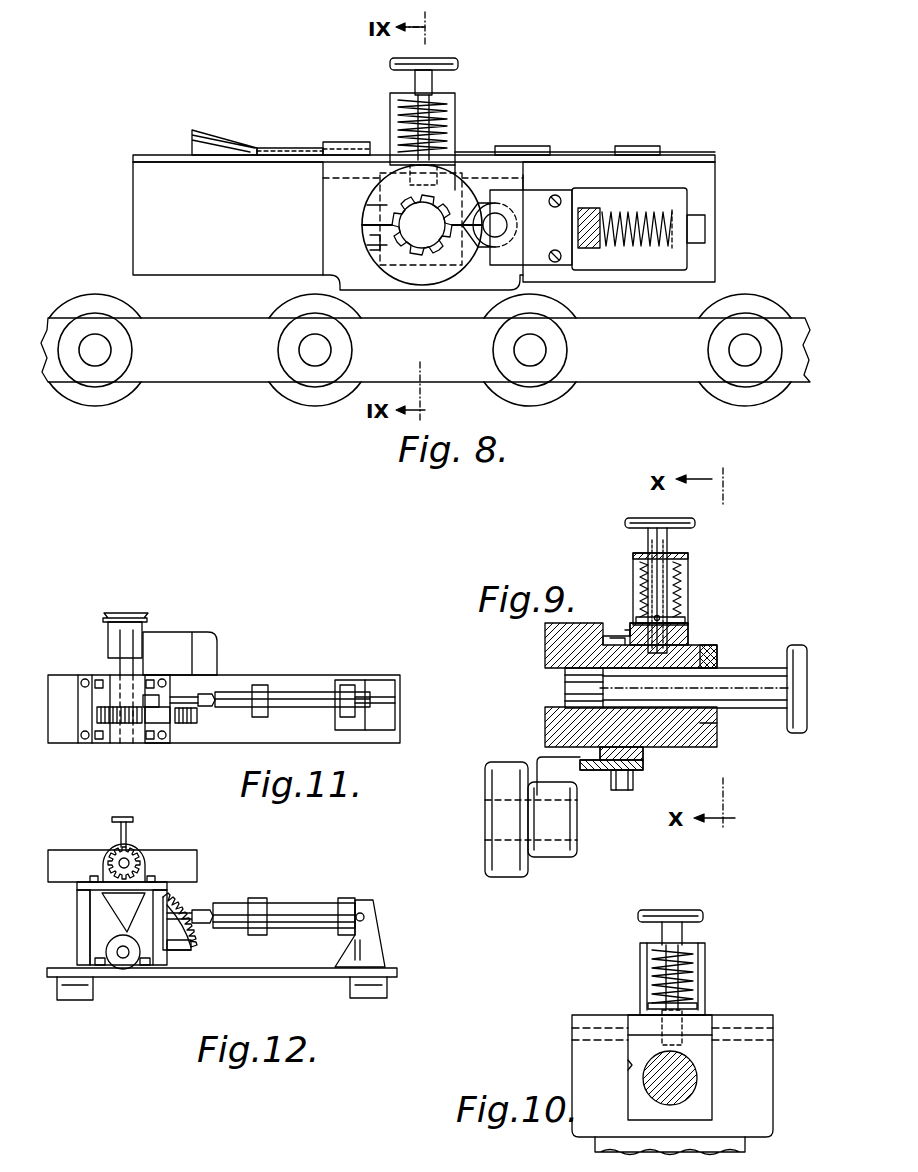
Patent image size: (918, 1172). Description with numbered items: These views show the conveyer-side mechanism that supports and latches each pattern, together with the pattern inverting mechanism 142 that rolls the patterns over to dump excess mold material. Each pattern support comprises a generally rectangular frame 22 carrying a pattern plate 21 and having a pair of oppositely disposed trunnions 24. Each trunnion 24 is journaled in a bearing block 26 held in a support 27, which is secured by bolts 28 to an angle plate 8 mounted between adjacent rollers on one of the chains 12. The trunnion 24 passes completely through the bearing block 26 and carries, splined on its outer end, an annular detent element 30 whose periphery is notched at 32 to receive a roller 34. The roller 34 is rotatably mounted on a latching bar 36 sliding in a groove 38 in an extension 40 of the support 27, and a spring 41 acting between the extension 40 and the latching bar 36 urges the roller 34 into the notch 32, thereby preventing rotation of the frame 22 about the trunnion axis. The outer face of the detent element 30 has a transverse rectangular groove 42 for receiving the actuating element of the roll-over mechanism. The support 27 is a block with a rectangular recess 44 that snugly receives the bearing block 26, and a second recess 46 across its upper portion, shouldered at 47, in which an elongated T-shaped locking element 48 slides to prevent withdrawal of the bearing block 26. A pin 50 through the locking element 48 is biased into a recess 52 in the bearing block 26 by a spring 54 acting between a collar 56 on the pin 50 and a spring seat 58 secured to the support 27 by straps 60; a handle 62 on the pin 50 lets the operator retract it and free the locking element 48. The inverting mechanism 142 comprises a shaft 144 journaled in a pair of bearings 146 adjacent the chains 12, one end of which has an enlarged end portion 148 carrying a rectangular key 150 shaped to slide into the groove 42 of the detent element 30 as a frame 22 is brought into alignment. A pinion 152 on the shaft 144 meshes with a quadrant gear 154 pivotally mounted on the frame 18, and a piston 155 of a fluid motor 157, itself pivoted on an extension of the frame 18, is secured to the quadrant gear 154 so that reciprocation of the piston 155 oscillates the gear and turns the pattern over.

In FIG. 8, the angle plate 8 is at (522, 302).
In FIG. 9, the angle plate 8 is at (567, 772).
In FIG. 8, the chains 12 is at (228, 365).
In FIG. 9, the chains 12 is at (497, 775).
In FIG. 11, the frame 18 is at (350, 735).
In FIG. 12, the frame 18 is at (292, 950).
In FIG. 8, the pattern plate 21 is at (147, 158).
In FIG. 8, the frame 22 is at (178, 190).
In FIG. 8, the trunnion 24 is at (435, 218).
In FIG. 9, the trunnion 24 is at (777, 696).
In FIG. 10, the trunnion 24 is at (685, 1080).
In FIG. 9, the bearing block 26 is at (705, 723).
In FIG. 10, the bearing block 26 is at (705, 1110).
In FIG. 8, the support 27 is at (323, 195).
In FIG. 9, the support 27 is at (657, 748).
In FIG. 10, the support 27 is at (760, 1125).
In FIG. 9, the bolts 28 is at (625, 790).
In FIG. 8, the annular detent element 30 is at (380, 195).
In FIG. 9, the annular detent element 30 is at (548, 642).
In FIG. 11, the annular detent element 30 is at (125, 618).
In FIG. 8, the notch 32 is at (445, 240).
In FIG. 8, the roller 34 is at (483, 255).
In FIG. 8, the latching bar 36 is at (535, 195).
In FIG. 8, the groove 38 is at (600, 212).
In FIG. 8, the extension 40 is at (655, 200).
In FIG. 8, the spring 41 is at (612, 248).
In FIG. 8, the groove 42 is at (375, 215).
In FIG. 9, the groove 42 is at (548, 674).
In FIG. 11, the groove 42 is at (136, 622).
In FIG. 8, the recess 44 is at (380, 262).
In FIG. 10, the recess 44 is at (630, 1065).
In FIG. 9, the second recess 46 is at (616, 642).
In FIG. 9, the shoulders 47 is at (632, 632).
In FIG. 8, the locking element 48 is at (488, 178).
In FIG. 9, the locking element 48 is at (690, 628).
In FIG. 10, the locking element 48 is at (636, 1022).
In FIG. 8, the pin 50 is at (426, 75).
In FIG. 9, the pin 50 is at (668, 540).
In FIG. 10, the pin 50 is at (685, 930).
In FIG. 9, the recess 52 is at (718, 652).
In FIG. 8, the spring 54 is at (440, 122).
In FIG. 9, the spring 54 is at (680, 575).
In FIG. 10, the spring 54 is at (692, 970).
In FIG. 8, the collar 56 is at (447, 210).
In FIG. 9, the collar 56 is at (686, 608).
In FIG. 10, the collar 56 is at (698, 1003).
In FIG. 8, the spring seat 58 is at (437, 100).
In FIG. 9, the spring seat 58 is at (689, 556).
In FIG. 10, the spring seat 58 is at (690, 950).
In FIG. 8, the straps 60 is at (392, 105).
In FIG. 9, the straps 60 is at (633, 568).
In FIG. 10, the straps 60 is at (705, 1008).
In FIG. 8, the handle 62 is at (430, 60).
In FIG. 9, the handle 62 is at (700, 520).
In FIG. 10, the handle 62 is at (700, 913).
In FIG. 11, the pattern inverting mechanism 142 is at (137, 745).
In FIG. 12, the pattern inverting mechanism 142 is at (235, 902).
In FIG. 11, the shaft 144 is at (108, 668).
In FIG. 12, the shaft 144 is at (150, 862).
In FIG. 11, the bearings 146 is at (138, 682).
In FIG. 12, the bearings 146 is at (105, 852).
In FIG. 11, the enlarged end portion 148 is at (108, 620).
In FIG. 11, the key 150 is at (145, 627).
In FIG. 11, the pinion 152 is at (100, 716).
In FIG. 12, the pinion 152 is at (138, 855).
In FIG. 11, the quadrant gear 154 is at (198, 715).
In FIG. 12, the quadrant gear 154 is at (192, 948).
In FIG. 11, the piston 155 is at (196, 698).
In FIG. 12, the piston 155 is at (200, 910).
In FIG. 11, the fluid motor 157 is at (290, 692).
In FIG. 12, the fluid motor 157 is at (303, 912).